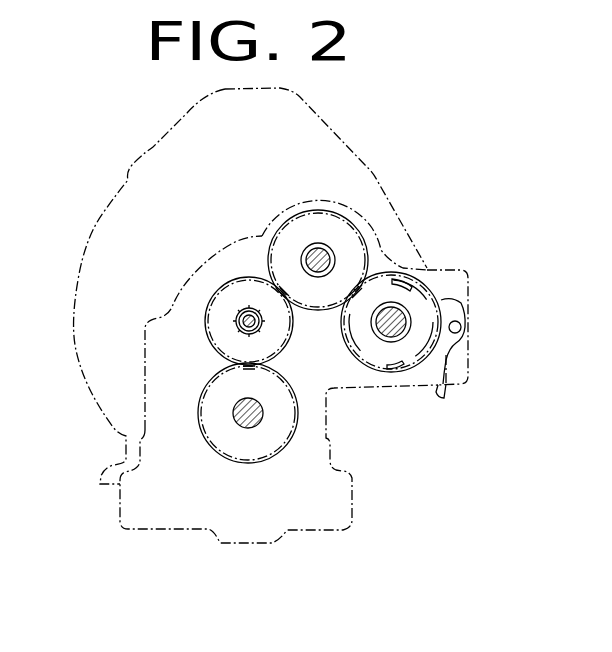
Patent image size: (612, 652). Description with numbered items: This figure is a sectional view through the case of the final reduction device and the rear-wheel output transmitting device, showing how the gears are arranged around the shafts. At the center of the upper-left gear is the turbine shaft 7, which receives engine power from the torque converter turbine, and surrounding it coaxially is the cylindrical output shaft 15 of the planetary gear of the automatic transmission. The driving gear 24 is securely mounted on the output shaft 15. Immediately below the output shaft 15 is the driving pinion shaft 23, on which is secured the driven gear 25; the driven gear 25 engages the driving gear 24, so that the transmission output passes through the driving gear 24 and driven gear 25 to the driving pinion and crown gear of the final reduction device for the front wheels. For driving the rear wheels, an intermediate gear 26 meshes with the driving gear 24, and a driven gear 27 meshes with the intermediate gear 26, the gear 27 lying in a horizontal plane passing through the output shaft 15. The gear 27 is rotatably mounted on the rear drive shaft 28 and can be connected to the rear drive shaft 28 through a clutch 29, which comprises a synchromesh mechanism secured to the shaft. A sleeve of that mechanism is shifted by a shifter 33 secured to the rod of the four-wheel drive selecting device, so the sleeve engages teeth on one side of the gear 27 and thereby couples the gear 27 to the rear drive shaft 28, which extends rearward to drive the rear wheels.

The turbine shaft 7 is at (262, 326).
The output shaft 15 is at (245, 312).
The driving pinion shaft 23 is at (237, 423).
The driving gear 24 is at (223, 340).
The driven gear 25 is at (242, 448).
The intermediate gear 26 is at (327, 227).
The driven gear 27 is at (410, 300).
The rear drive shaft 28 is at (412, 322).
The clutch 29 is at (455, 361).
The shifter 33 is at (446, 392).